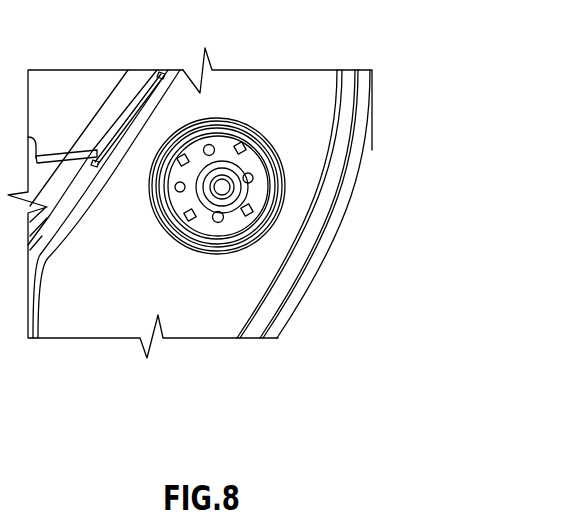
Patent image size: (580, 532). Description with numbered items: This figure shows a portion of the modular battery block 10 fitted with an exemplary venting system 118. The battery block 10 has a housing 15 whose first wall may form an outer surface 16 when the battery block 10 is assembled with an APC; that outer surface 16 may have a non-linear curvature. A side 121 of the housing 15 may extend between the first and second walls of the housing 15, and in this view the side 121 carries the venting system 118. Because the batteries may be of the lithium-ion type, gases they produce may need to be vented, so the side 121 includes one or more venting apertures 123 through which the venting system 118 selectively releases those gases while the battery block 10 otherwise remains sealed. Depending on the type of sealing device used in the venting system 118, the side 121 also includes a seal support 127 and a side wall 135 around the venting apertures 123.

The battery block 10 is at (440, 90).
The venting system 118 is at (473, 190).
The outer surface 16 is at (365, 148).
The housing 15 is at (310, 255).
The side wall 135 is at (225, 130).
The venting apertures 123 is at (249, 173).
The seal support 127 is at (230, 202).
The side 121 is at (58, 295).